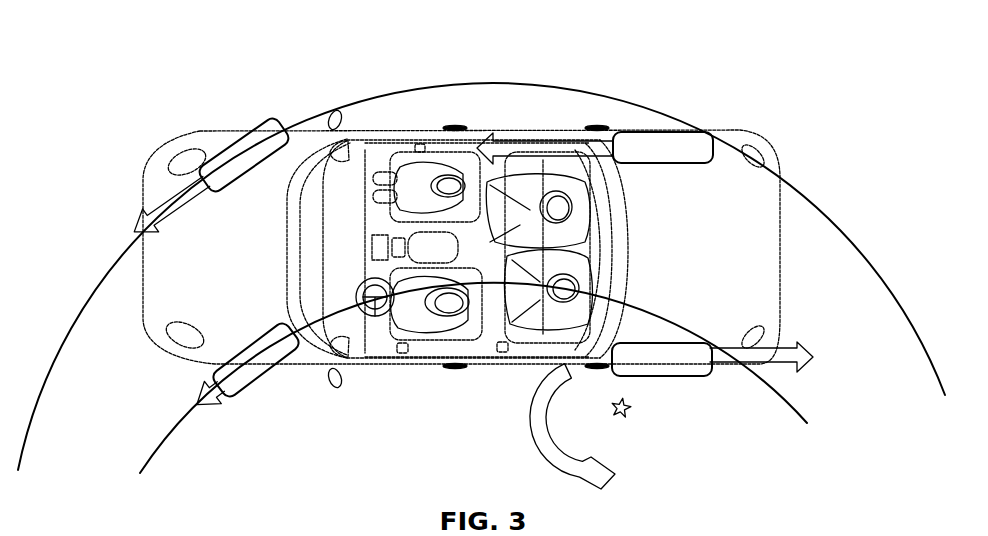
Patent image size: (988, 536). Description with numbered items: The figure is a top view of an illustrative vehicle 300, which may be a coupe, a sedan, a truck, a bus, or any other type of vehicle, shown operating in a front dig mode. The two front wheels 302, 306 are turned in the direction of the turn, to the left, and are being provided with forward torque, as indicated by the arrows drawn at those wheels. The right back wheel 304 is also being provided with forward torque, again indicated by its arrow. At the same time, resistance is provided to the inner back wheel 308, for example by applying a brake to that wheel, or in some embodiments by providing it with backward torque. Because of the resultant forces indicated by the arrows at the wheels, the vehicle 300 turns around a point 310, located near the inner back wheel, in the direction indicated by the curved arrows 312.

The vehicle 300 is at (497, 65).
The front wheel 302 is at (227, 157).
The right back wheel 304 is at (652, 140).
The front wheel 306 is at (245, 377).
The inner back wheel 308 is at (682, 365).
The point 310 is at (630, 410).
The arrows 312 is at (537, 425).